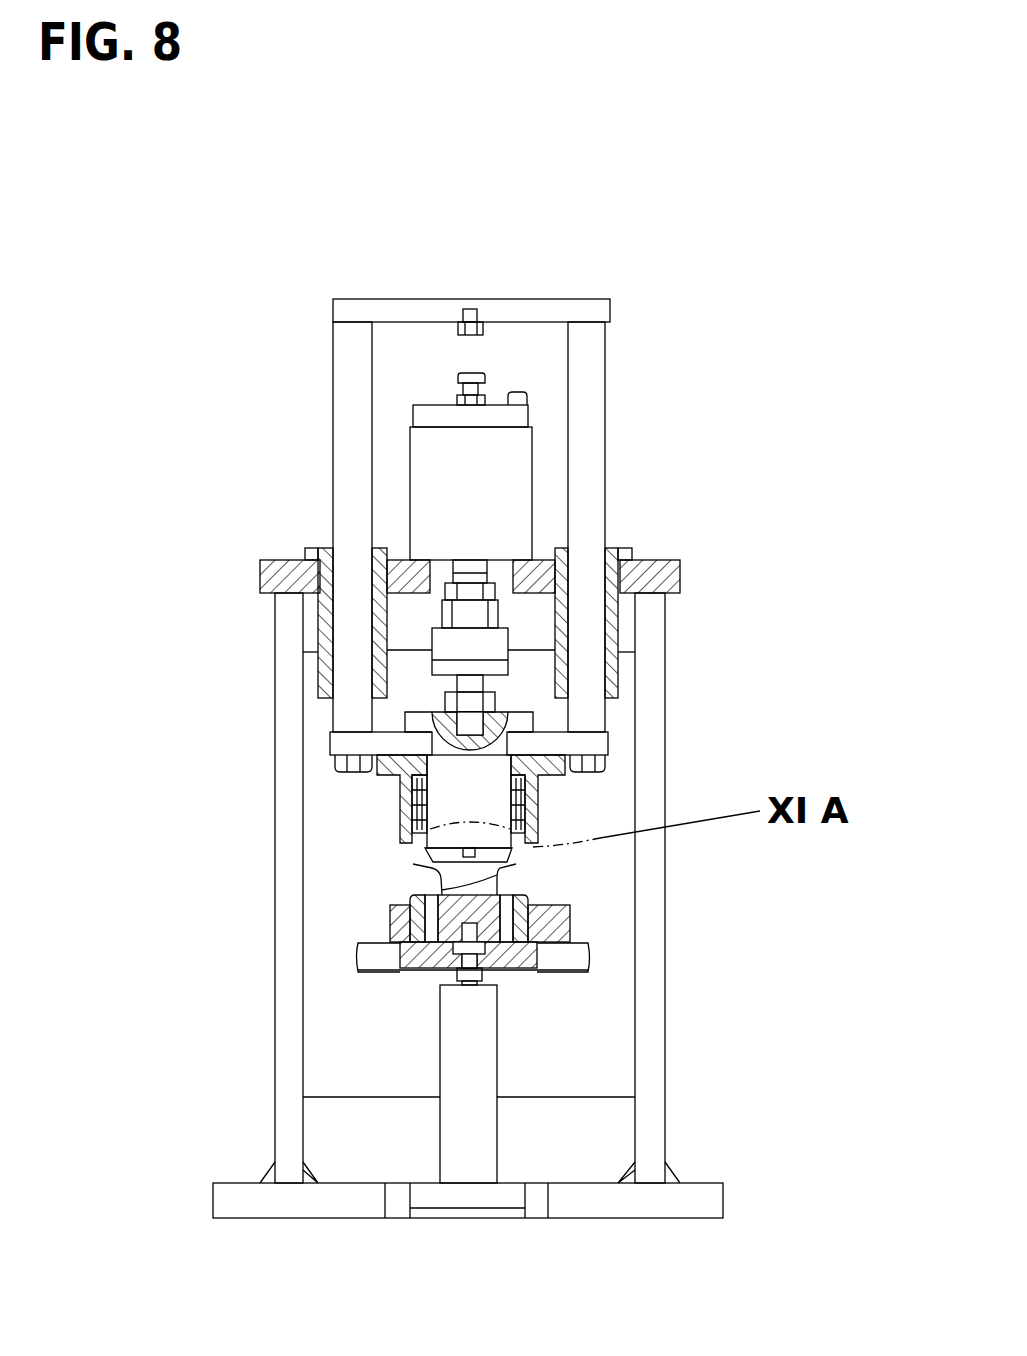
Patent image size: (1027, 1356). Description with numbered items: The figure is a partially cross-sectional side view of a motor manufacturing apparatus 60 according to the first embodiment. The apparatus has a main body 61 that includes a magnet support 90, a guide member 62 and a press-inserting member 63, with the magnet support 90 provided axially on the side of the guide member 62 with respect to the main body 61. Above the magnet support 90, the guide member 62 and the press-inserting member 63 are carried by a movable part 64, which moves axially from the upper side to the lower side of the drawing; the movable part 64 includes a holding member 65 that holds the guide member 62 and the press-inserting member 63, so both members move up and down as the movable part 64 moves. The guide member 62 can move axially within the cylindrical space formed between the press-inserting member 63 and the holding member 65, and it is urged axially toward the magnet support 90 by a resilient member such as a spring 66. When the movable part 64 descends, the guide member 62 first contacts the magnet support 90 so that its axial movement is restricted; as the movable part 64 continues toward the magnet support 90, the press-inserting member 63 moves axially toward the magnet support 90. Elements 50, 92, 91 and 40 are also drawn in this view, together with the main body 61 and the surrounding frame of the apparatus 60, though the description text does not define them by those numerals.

The motor manufacturing apparatus 60 is at (627, 358).
The movable part 64 is at (333, 418).
The press-inserting member 63 is at (440, 792).
The holding member 65 is at (400, 815).
The spring 66 is at (540, 785).
The guide member 62 is at (420, 854).
The clip 50 is at (413, 865).
The center block 92 is at (490, 891).
The side block 91 is at (390, 922).
The plate 40 is at (395, 938).
The magnet support 90 is at (578, 921).
The main body 61 is at (385, 973).